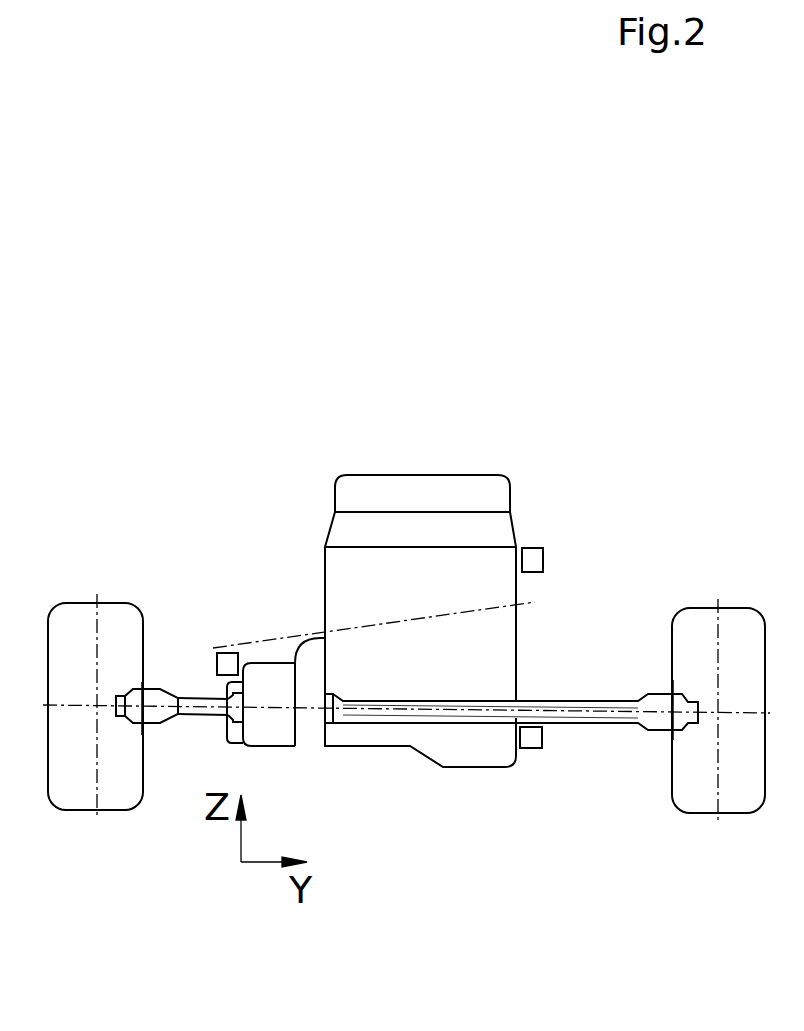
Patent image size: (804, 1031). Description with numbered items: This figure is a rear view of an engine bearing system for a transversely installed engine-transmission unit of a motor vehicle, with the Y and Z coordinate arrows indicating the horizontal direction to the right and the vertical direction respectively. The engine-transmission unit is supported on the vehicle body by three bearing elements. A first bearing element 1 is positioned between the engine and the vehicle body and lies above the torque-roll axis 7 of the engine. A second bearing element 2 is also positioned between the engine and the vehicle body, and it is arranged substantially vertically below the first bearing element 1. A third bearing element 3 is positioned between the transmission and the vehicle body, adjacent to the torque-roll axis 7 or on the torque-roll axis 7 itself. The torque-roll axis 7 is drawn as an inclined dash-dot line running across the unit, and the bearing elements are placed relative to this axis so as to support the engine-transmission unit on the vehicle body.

The first bearing element 1 is at (545, 557).
The second bearing element 2 is at (532, 750).
The third bearing element 3 is at (215, 665).
The torque-roll axis 7 is at (280, 640).